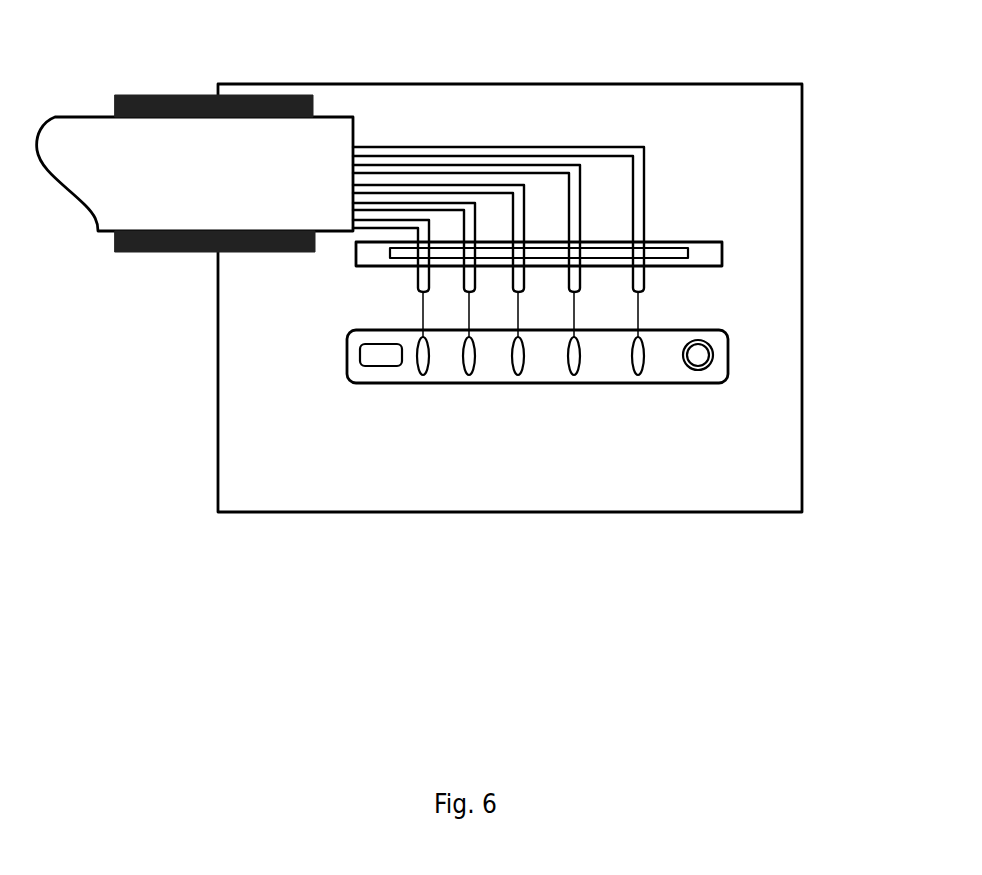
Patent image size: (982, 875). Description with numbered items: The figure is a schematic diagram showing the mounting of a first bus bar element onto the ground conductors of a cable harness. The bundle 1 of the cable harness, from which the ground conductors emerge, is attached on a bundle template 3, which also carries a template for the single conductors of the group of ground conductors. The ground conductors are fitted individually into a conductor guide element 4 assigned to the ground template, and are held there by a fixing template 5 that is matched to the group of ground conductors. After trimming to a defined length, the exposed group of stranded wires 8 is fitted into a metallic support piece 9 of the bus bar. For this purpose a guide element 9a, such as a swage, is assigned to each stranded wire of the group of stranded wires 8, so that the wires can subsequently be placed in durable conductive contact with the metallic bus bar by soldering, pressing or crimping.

The bundle 1 is at (80, 116).
The bundle template 3 is at (805, 377).
The conductor guide element 4 is at (722, 258).
The fixing template 5 is at (682, 250).
The group of stranded wires 8 is at (638, 321).
The support piece 9 is at (612, 383).
The guide element 9a is at (423, 374).